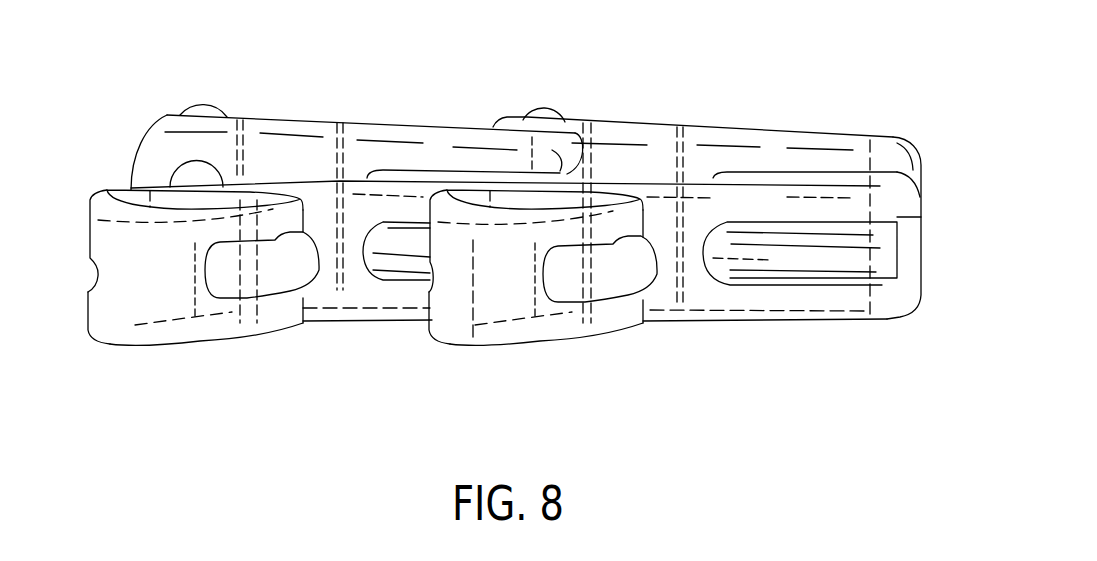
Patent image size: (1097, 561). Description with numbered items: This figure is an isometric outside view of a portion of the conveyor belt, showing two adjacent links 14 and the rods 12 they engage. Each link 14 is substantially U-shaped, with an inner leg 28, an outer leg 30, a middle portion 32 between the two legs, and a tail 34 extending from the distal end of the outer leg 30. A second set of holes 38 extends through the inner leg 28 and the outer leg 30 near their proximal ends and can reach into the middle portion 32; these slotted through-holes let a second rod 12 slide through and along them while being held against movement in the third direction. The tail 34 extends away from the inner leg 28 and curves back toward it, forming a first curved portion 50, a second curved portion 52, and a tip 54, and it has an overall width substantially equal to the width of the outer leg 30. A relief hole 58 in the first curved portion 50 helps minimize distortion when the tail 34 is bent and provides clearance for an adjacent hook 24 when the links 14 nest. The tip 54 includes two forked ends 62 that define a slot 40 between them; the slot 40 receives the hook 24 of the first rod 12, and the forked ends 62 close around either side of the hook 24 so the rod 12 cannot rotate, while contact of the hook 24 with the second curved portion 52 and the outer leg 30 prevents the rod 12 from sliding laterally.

The rod 12 is at (166, 162).
The link 14 is at (501, 241).
The hook 24 is at (280, 279).
The inner leg 28 is at (490, 157).
The outer leg 30 is at (629, 246).
The middle portion 32 is at (919, 244).
The tail 34 is at (371, 274).
The second set of holes 38 is at (406, 231).
The slot 40 is at (236, 306).
The first curved portion 50 is at (84, 311).
The second curved portion 52 is at (182, 301).
The tip 54 is at (307, 300).
The relief hole 58 is at (85, 262).
The forked ends 62 is at (281, 221).